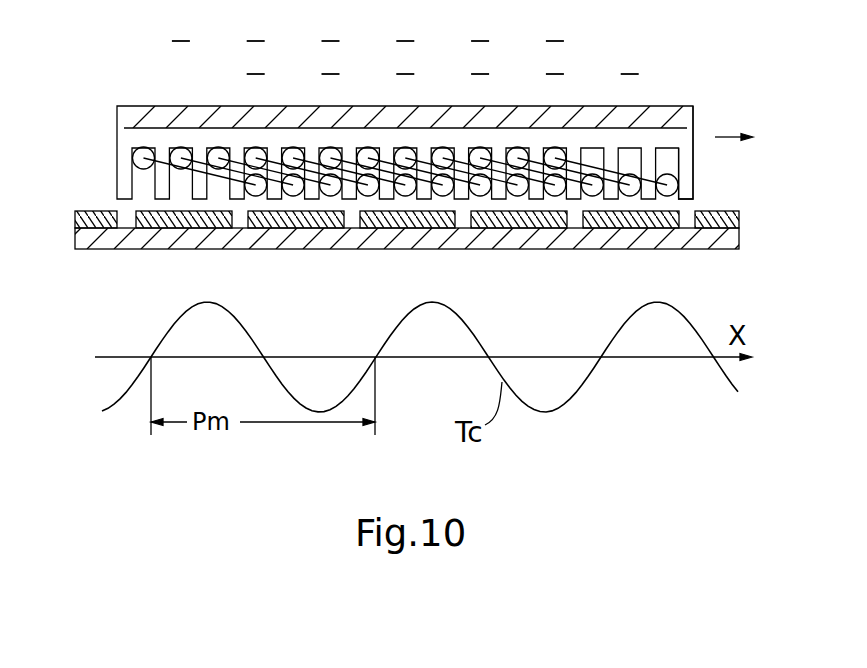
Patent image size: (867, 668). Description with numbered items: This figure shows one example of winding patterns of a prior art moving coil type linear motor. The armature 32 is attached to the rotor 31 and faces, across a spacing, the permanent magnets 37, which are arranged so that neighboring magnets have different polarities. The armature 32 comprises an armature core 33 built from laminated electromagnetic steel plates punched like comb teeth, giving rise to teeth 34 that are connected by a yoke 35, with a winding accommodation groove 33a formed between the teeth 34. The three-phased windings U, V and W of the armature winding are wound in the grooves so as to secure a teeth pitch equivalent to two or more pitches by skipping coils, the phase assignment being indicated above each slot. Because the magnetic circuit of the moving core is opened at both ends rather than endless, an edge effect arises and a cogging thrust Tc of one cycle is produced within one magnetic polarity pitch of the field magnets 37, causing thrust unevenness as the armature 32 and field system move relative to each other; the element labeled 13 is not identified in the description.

The coil 13 is at (521, 196).
The rotor 31 is at (128, 110).
The armature 32 is at (692, 137).
The armature core 33 is at (125, 141).
The winding accommodation groove 33a is at (658, 152).
The teeth 34 is at (381, 191).
The yoke 35 is at (665, 243).
The permanent magnets 37 is at (164, 216).